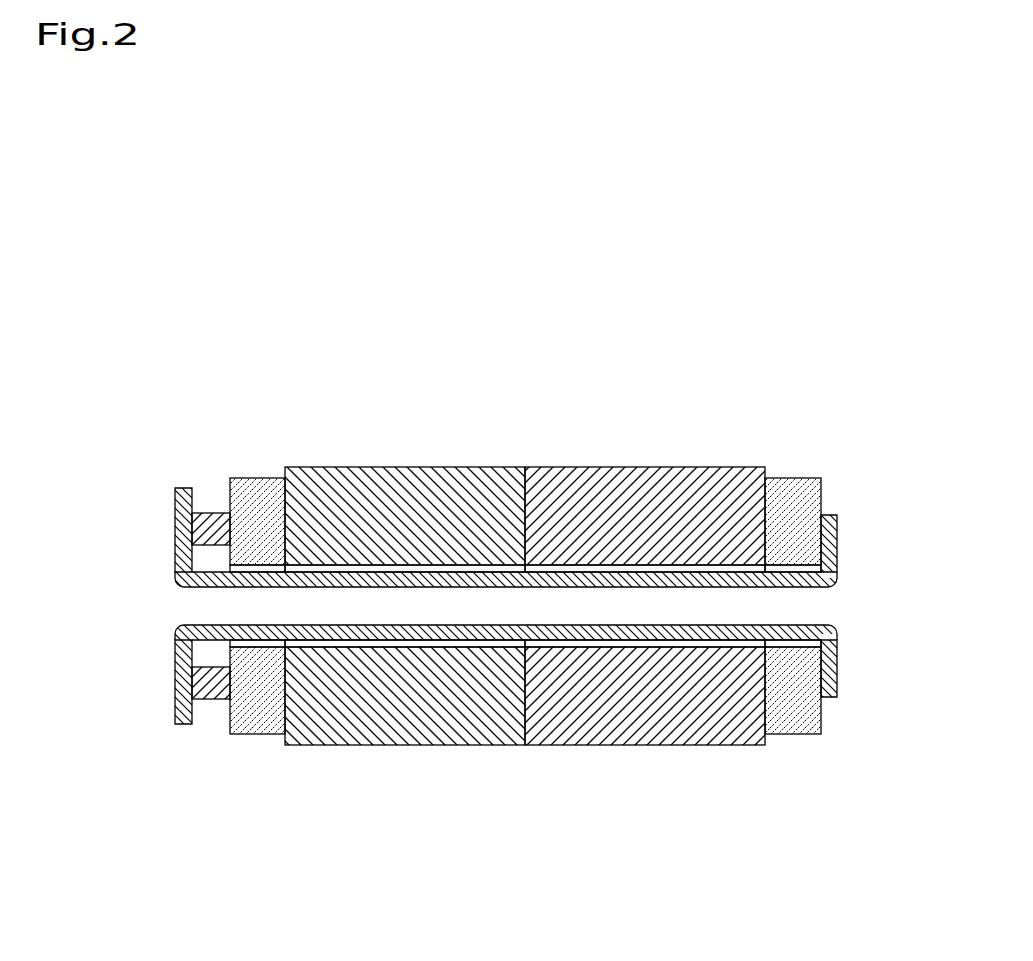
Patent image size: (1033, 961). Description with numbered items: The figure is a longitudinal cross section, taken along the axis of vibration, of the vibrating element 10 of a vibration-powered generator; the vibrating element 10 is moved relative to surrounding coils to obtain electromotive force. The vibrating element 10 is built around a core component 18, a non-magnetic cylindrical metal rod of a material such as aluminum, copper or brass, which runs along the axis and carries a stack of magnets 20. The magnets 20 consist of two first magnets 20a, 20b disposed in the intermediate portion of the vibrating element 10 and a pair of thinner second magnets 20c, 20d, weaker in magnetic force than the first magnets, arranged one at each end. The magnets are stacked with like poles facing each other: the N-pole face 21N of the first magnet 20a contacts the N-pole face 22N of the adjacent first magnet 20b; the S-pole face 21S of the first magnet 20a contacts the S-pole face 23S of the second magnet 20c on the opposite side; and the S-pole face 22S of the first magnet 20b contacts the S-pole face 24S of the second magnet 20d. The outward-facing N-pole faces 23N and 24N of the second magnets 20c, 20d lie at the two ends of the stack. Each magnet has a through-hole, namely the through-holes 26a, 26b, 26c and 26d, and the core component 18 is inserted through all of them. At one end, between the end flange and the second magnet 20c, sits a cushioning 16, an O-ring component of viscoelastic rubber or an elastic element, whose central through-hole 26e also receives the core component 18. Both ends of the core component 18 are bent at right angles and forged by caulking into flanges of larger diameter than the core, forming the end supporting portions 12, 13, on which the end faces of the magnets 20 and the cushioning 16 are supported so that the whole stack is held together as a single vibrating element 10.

The vibrating element 10 is at (569, 384).
The end supporting portion 12 is at (176, 518).
The end supporting portion 13 is at (838, 540).
The cushioning 16 is at (211, 510).
The core component 18 is at (673, 587).
The magnets 20 is at (504, 392).
The first magnet 20a is at (405, 466).
The first magnet 20b is at (632, 466).
The second magnet 20c is at (256, 478).
The second magnet 20d is at (798, 477).
The pole-face of the S-pole of the first magnet 20a 21S is at (290, 690).
The pole-face of the N-pole of the first magnet 20a 21N is at (535, 690).
The pole-face of the N-pole of the first magnet 20b 22N is at (513, 720).
The pole-face of the S-pole of the first magnet 20b 22S is at (765, 722).
The pole-face of the N-pole of the second magnet 20c 23N is at (222, 732).
The pole-face of the S-pole of the second magnet 20c 23S is at (275, 690).
The pole-face of the S-pole of the second magnet 20d 24S is at (772, 678).
The pole-face of the N-pole of the second magnet 20d 24N is at (832, 695).
The through-hole 26a is at (390, 570).
The through-hole 26b is at (573, 570).
The through-hole 26c is at (280, 570).
The through-hole 26d is at (786, 570).
The through-hole 26e is at (203, 560).